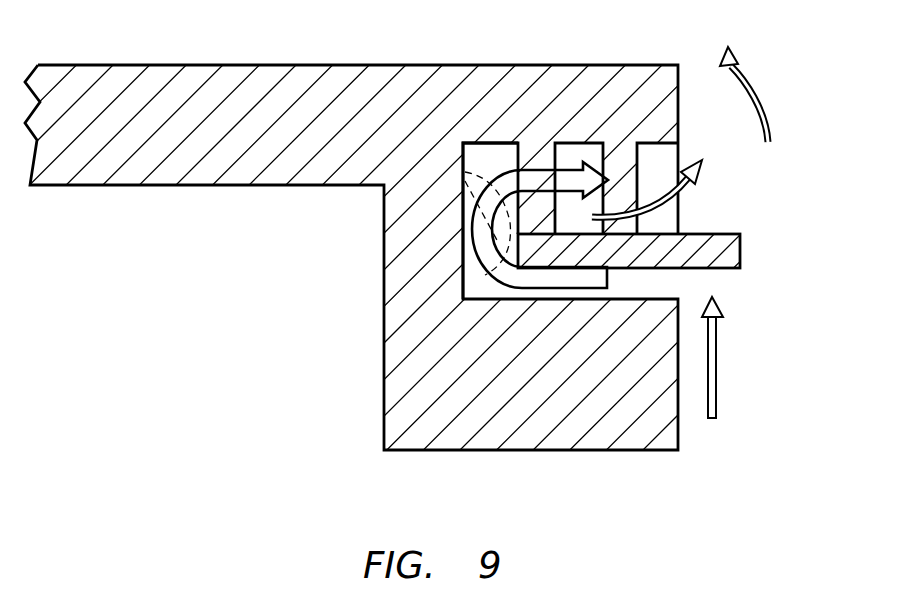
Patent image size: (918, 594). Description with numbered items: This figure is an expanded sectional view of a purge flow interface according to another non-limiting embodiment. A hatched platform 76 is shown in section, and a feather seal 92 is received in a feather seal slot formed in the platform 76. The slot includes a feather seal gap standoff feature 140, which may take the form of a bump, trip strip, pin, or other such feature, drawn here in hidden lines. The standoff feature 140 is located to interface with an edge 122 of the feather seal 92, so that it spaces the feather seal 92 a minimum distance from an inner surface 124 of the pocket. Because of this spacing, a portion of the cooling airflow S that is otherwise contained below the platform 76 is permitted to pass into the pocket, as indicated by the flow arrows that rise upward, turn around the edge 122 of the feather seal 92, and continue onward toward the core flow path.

The platform 76 is at (132, 163).
The inner surface of the pocket 124 is at (465, 168).
The edge of the feather seal 122 is at (493, 262).
The feather seal gap standoff feature 140 is at (483, 295).
The feather seal 92 is at (725, 234).
The cooling airflow S is at (712, 390).